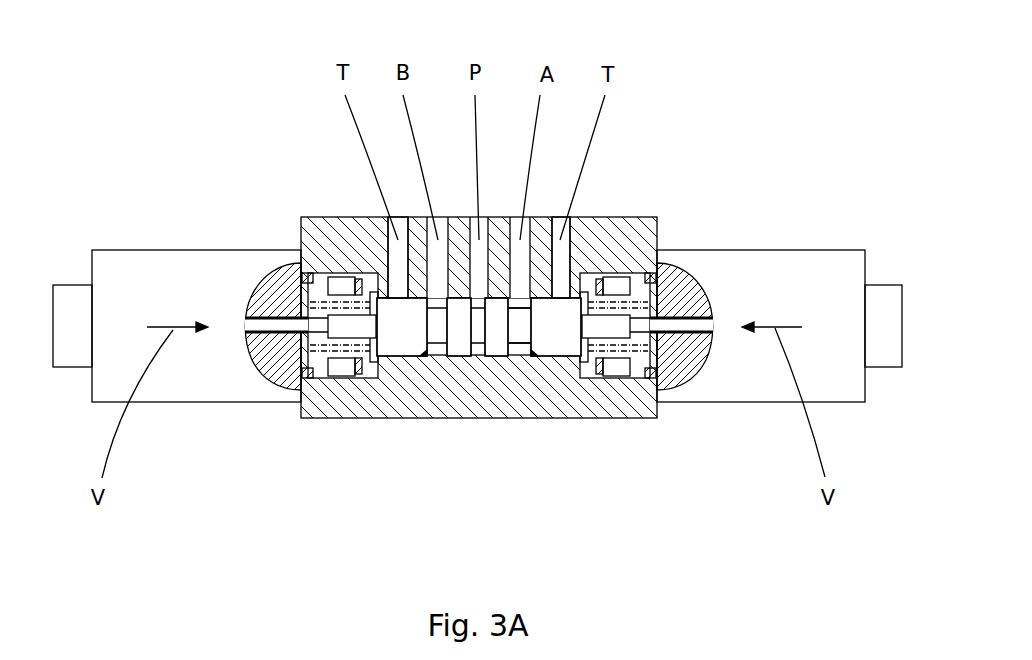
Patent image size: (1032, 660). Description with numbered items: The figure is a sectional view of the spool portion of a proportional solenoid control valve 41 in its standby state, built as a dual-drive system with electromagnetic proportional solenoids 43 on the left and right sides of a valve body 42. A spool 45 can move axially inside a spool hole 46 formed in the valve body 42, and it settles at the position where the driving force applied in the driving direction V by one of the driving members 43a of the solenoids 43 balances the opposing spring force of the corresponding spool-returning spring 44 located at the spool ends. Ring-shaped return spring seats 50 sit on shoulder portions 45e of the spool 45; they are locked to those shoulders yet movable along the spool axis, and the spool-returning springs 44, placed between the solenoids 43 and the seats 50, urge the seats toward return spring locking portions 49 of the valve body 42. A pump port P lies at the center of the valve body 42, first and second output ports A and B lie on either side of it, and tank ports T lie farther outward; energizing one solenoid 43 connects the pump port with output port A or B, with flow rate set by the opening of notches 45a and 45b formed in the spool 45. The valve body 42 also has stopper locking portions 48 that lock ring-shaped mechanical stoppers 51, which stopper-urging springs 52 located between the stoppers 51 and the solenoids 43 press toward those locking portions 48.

The proportional solenoid control valve 41 is at (740, 95).
The valve body 42 is at (618, 216).
The electromagnetic proportional solenoid 43 is at (147, 253).
The driving member 43a is at (268, 327).
The spool-returning spring 44 is at (340, 362).
The spool 45 is at (460, 358).
The notch 45a is at (458, 298).
The notch 45b is at (420, 296).
The shoulder portion 45e is at (408, 360).
The spool hole 46 is at (520, 360).
The stopper locking portion 48 is at (377, 285).
The return spring locking portion 49 is at (393, 385).
The return spring seat 50 is at (372, 395).
The mechanical stopper 51 is at (345, 276).
The stopper-urging spring 52 is at (304, 272).